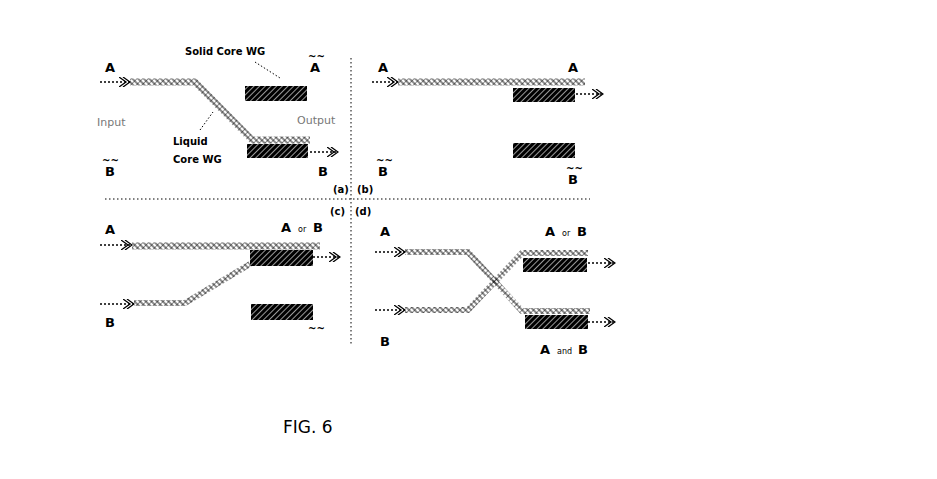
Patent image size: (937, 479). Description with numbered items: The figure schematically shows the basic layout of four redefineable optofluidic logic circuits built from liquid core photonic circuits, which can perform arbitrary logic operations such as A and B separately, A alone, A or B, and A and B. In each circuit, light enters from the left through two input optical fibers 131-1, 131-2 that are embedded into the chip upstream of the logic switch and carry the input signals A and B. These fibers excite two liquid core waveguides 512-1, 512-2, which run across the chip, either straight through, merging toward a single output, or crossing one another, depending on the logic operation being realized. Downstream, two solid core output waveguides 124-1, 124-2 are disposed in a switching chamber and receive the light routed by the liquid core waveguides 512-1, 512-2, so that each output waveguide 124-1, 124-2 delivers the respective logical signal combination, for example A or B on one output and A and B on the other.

The input optical fiber 131-1 is at (81, 236).
The input optical fiber 131-2 is at (82, 300).
The liquid core waveguide 512-1 is at (226, 230).
The liquid core waveguide 512-2 is at (192, 302).
The solid core output waveguide 124-1 is at (295, 271).
The solid core output waveguide 124-2 is at (283, 331).